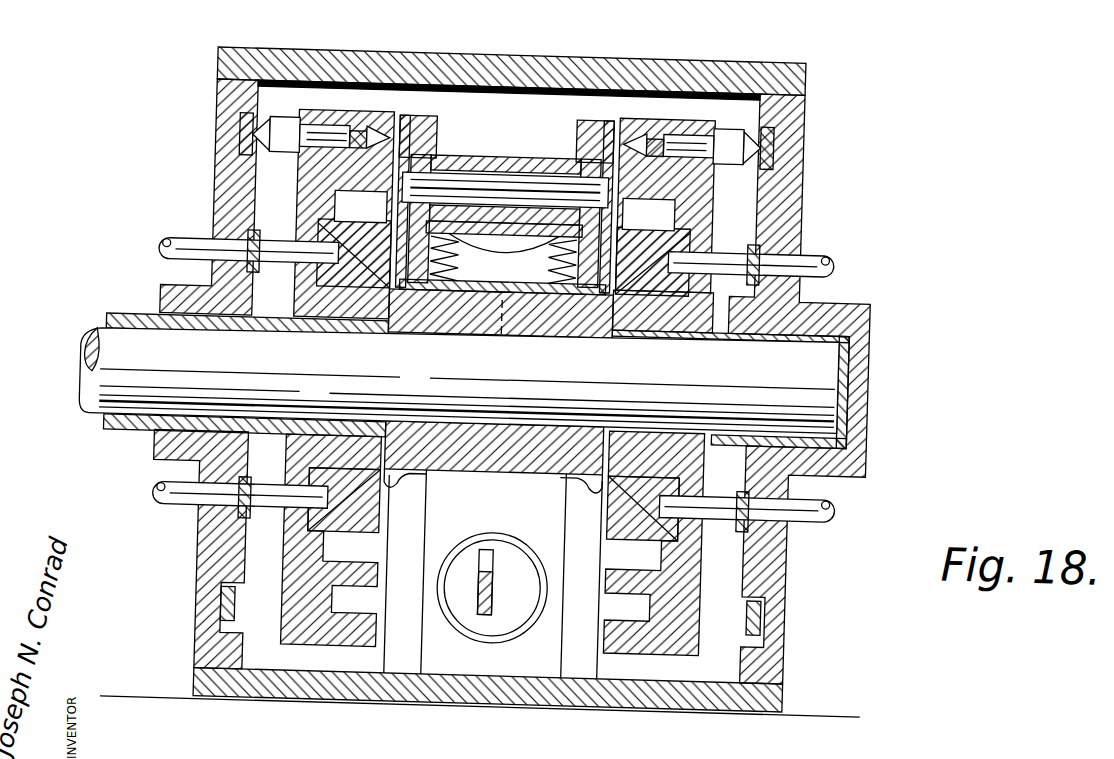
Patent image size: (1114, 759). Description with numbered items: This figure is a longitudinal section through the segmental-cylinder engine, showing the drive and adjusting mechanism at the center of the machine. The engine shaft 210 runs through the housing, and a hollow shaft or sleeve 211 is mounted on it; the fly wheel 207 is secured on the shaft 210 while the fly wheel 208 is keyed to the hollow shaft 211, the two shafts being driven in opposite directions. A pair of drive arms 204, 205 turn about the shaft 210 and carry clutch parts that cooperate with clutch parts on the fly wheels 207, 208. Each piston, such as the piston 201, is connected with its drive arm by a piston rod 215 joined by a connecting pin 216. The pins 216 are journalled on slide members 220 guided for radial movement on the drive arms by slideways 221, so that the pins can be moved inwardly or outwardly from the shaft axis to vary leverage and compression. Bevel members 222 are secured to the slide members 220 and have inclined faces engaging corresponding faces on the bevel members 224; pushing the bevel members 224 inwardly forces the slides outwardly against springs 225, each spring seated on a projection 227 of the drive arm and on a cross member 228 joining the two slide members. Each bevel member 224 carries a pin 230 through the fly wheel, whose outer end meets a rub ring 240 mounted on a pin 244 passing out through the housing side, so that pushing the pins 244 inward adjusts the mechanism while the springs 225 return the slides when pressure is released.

The piston 201 is at (490, 642).
The drive arm 204 is at (551, 320).
The drive arm 205 is at (463, 437).
The fly wheel 207 is at (656, 632).
The fly wheel 208 is at (309, 643).
The engine shaft 210 is at (86, 396).
The hollow shaft 211 is at (106, 323).
The piston rod 215 is at (508, 166).
The connecting pin 216 is at (494, 148).
The slide member 220 is at (434, 134).
The slideway 221 is at (430, 120).
The bevel member 222 is at (504, 210).
The bevel member 224 is at (316, 230).
The spring 225 is at (545, 264).
The projection 227 is at (552, 229).
The cross member 228 is at (463, 332).
The pin 230 is at (275, 266).
The rub ring 240 is at (241, 243).
The pin 244 is at (156, 259).